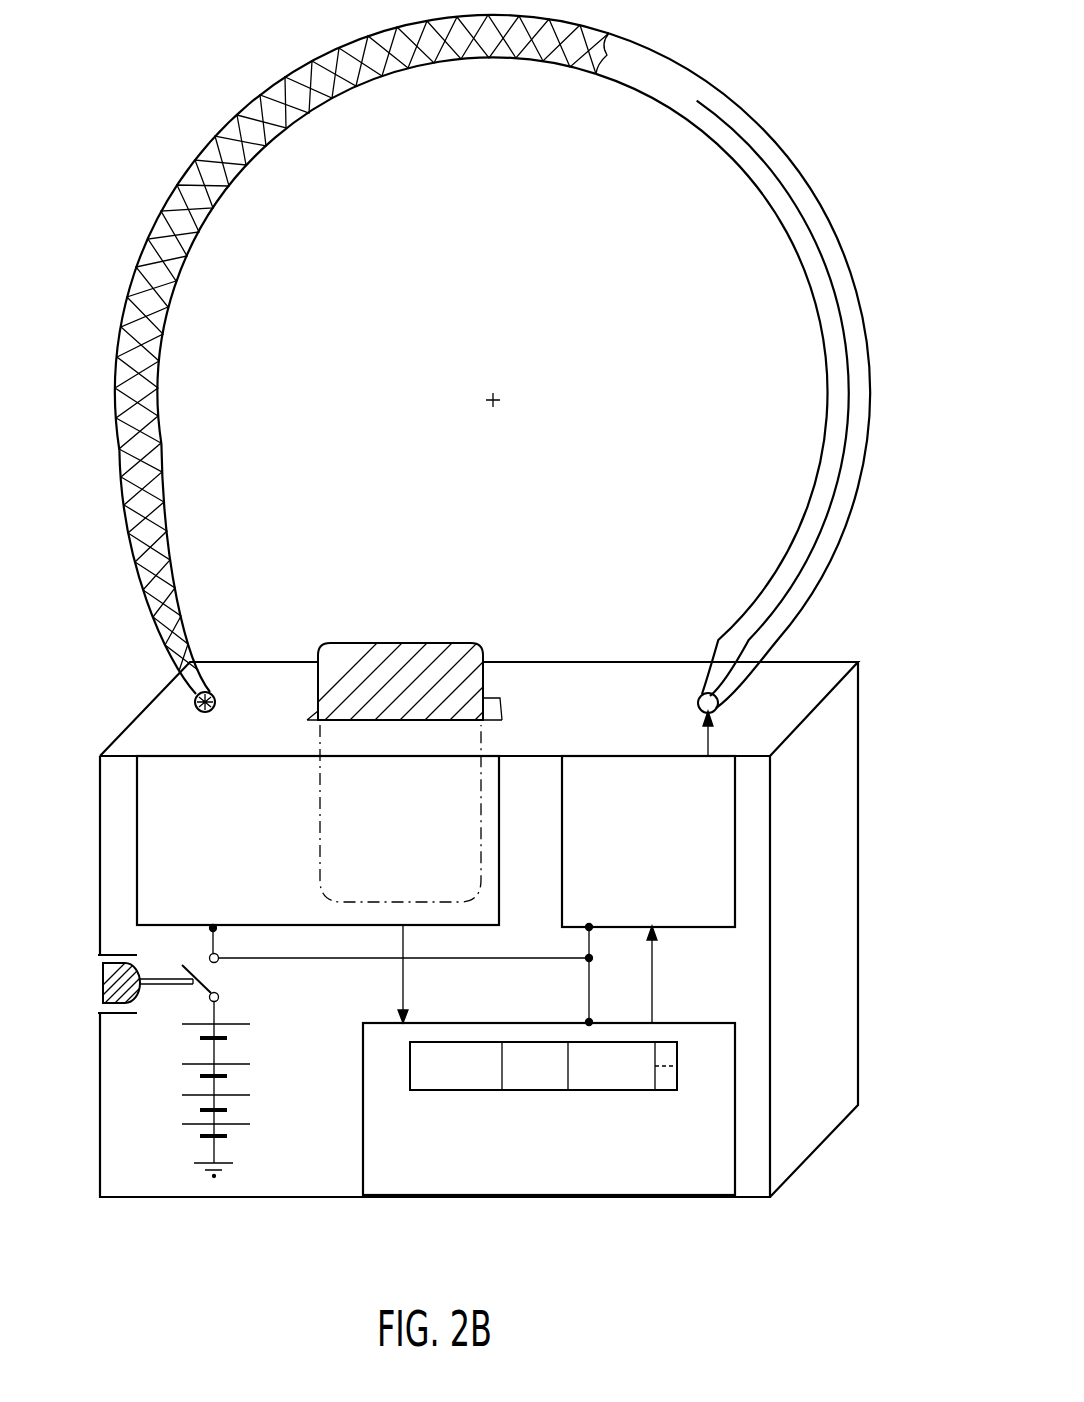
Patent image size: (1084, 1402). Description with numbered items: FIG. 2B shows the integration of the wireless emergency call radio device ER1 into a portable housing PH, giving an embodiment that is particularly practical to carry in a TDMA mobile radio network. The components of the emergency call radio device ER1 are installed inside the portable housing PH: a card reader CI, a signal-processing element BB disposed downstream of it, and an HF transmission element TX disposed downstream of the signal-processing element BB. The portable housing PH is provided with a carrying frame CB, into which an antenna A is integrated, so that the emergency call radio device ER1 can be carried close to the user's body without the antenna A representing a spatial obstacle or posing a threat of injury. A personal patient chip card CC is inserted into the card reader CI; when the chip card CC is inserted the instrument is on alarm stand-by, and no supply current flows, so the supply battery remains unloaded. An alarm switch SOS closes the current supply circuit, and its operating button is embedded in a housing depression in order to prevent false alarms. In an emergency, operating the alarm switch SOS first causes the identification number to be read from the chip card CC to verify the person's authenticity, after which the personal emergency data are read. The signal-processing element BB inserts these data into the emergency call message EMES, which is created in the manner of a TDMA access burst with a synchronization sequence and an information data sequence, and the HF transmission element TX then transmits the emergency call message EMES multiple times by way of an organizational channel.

The emergency call radio device ER1 is at (822, 1333).
The carrying frame CB is at (138, 452).
The antenna A is at (848, 430).
The portable housing PH is at (858, 662).
The personal patient chip card CC is at (443, 656).
The card reader CI is at (233, 853).
The HF transmission element TX is at (674, 848).
The alarm switch SOS is at (176, 985).
The signal-processing element BB is at (549, 1109).
The emergency call message EMES is at (678, 1100).